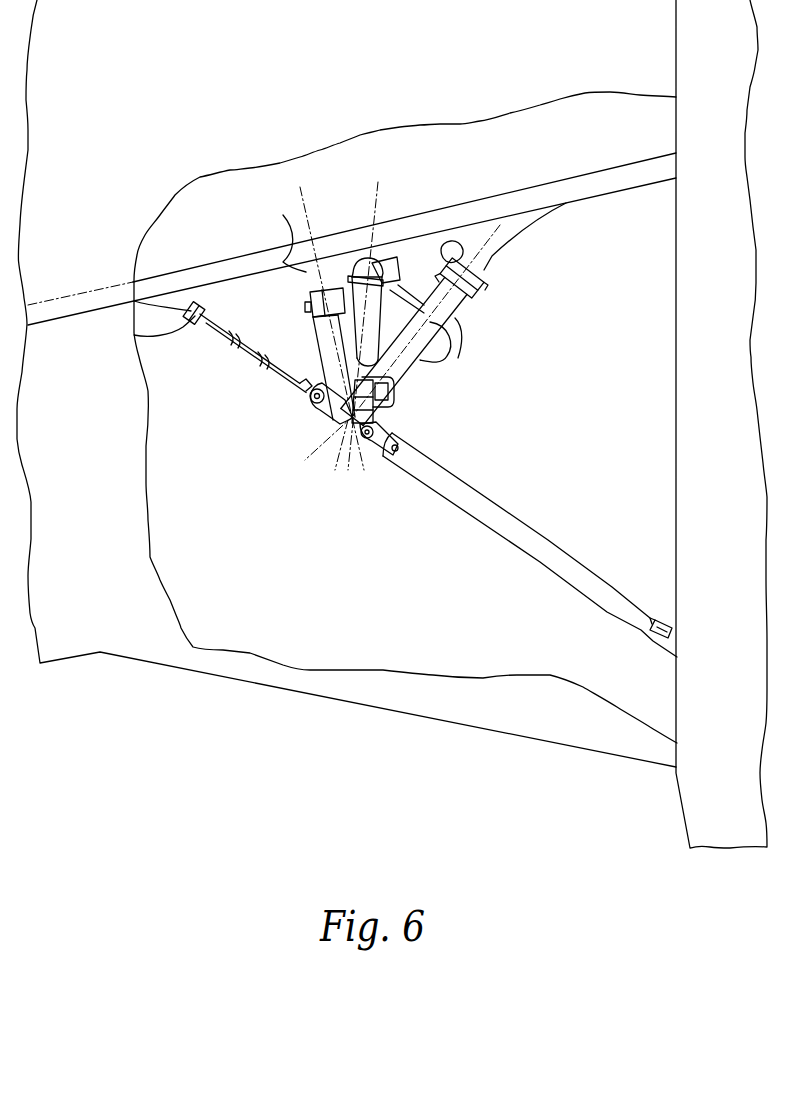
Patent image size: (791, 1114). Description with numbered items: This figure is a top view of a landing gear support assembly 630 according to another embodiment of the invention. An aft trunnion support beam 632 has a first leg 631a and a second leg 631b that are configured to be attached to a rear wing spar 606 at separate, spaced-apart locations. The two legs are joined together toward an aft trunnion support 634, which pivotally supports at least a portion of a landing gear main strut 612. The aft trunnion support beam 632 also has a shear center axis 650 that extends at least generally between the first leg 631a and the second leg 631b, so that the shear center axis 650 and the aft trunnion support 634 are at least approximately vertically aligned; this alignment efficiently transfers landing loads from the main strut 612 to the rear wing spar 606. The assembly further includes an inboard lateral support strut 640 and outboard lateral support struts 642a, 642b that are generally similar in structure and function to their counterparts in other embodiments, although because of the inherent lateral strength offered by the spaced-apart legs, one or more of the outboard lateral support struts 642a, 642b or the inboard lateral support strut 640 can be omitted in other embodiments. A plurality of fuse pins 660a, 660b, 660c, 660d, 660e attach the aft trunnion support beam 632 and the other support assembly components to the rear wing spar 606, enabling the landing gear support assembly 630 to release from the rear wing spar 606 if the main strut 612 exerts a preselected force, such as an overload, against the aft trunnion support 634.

The rear wing spar 606 is at (588, 172).
The landing gear main strut 612 is at (450, 352).
The landing gear support assembly 630 is at (302, 433).
The first leg 631a is at (305, 292).
The second leg 631b is at (477, 315).
The aft trunnion support beam 632 is at (315, 345).
The aft trunnion support 634 is at (372, 418).
The inboard lateral support strut 640 is at (522, 553).
The outboard lateral support strut 642a is at (333, 347).
The outboard lateral support strut 642b is at (247, 357).
The shear center axis 650 is at (293, 398).
The fuse pin 660a is at (300, 298).
The fuse pin 660b is at (366, 258).
The fuse pin 660c is at (390, 358).
The fuse pin 660d is at (195, 303).
The fuse pin 660e is at (134, 335).